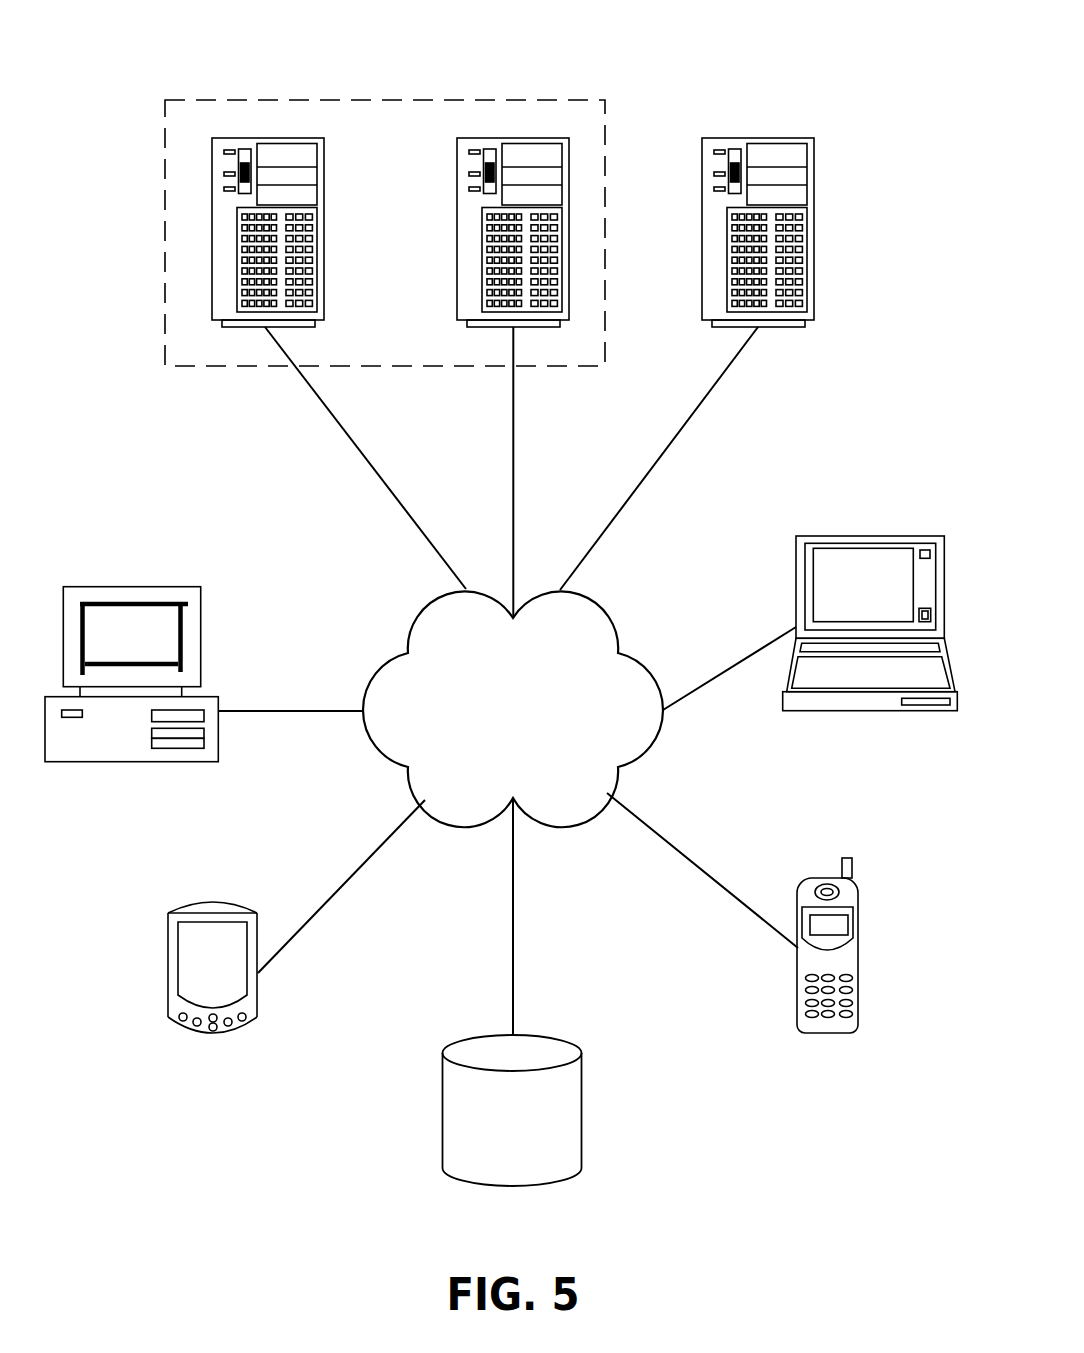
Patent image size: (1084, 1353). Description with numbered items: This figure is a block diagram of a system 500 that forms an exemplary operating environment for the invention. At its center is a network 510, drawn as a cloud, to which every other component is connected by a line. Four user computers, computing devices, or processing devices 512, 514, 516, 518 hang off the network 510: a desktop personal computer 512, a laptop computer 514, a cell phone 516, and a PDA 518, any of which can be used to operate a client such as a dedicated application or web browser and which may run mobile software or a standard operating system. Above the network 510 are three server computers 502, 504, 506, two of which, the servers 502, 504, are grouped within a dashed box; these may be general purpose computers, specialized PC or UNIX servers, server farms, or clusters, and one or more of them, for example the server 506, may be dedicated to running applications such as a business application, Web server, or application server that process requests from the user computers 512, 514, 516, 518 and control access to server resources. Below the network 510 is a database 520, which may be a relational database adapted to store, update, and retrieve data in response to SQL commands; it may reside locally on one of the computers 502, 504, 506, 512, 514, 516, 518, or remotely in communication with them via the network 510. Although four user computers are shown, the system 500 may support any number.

The system 500 is at (870, 124).
The server computer 502 is at (265, 137).
The server computer 504 is at (513, 137).
The server computer 506 is at (815, 300).
The network 510 is at (532, 746).
The user computer 512 is at (127, 586).
The user computer 514 is at (830, 535).
The user computer 516 is at (828, 1035).
The user computer 518 is at (212, 1037).
The database 520 is at (495, 1145).